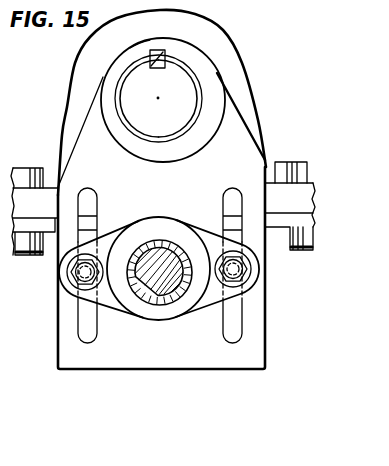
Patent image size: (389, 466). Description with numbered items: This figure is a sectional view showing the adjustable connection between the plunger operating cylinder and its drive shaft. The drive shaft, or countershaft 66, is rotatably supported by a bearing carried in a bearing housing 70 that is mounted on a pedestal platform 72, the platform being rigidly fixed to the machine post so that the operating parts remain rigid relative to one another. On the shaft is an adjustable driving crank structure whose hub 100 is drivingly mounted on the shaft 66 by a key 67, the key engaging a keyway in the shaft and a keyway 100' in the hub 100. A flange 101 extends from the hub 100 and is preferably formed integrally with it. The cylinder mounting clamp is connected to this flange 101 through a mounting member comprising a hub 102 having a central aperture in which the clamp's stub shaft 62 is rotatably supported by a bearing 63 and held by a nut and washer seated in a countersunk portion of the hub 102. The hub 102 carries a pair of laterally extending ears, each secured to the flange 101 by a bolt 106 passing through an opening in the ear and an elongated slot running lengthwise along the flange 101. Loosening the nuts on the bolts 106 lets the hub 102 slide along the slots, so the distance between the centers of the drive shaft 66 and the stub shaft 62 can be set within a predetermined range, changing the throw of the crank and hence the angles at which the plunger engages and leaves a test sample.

The stub shaft 62 is at (153, 293).
The journal bearing 63 is at (165, 305).
The countershaft 66 is at (182, 83).
The key 67 is at (160, 53).
The bearing housing 70 is at (162, 102).
The pedestal platform 72 is at (272, 222).
The hub 100 is at (148, 112).
The keyway 100' is at (96, 43).
The flange 101 is at (170, 358).
The hub 102 is at (180, 207).
The bolt 106 is at (83, 272).